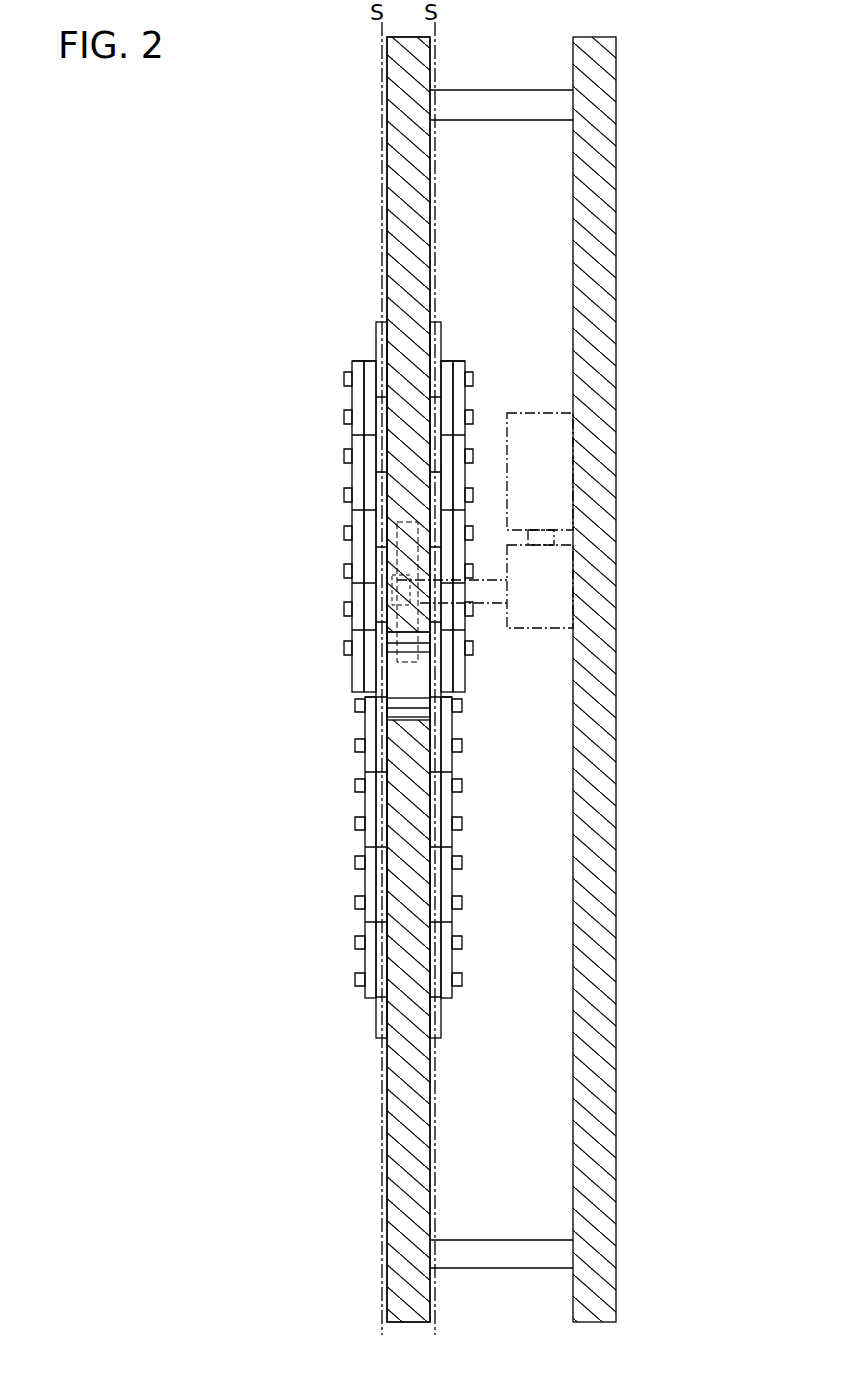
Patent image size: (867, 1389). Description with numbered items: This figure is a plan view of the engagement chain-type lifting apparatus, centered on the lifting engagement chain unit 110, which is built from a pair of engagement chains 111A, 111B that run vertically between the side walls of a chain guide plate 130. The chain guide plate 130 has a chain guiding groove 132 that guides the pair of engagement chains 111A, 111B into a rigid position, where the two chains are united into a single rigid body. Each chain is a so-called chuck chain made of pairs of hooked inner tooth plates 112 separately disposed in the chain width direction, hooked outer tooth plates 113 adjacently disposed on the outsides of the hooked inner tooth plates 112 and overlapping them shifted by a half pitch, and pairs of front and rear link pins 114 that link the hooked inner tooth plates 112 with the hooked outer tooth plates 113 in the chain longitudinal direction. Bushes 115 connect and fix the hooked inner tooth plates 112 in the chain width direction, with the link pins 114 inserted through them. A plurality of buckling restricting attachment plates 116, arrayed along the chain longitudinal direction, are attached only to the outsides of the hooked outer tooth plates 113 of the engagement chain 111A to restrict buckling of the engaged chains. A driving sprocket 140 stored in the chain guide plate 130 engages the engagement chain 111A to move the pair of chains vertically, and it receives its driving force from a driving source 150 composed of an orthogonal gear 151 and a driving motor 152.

The lifting engagement chain unit 110 is at (176, 495).
The engagement chain 111A is at (298, 504).
The engagement chain 111B is at (298, 848).
The hooked inner tooth plate 112 is at (375, 322).
The hooked outer tooth plate 113 is at (368, 361).
The link pin 114 is at (344, 417).
The bush 115 is at (420, 646).
The buckling restricting attachment plate 116 is at (352, 364).
The chain guide plate 130 is at (405, 1278).
The chain guiding groove 132 is at (403, 666).
The driving sprocket 140 is at (420, 617).
The driving source 150 is at (633, 520).
The orthogonal gear 151 is at (548, 565).
The driving motor 152 is at (548, 480).